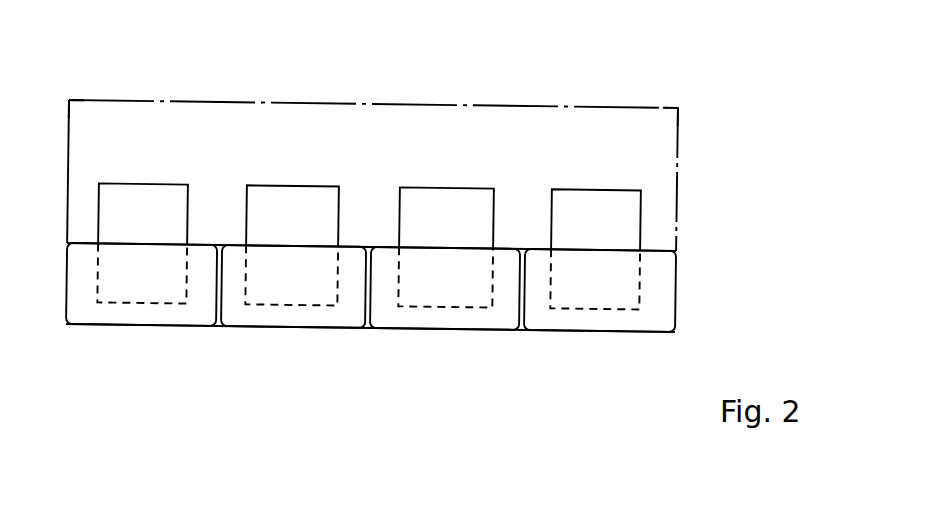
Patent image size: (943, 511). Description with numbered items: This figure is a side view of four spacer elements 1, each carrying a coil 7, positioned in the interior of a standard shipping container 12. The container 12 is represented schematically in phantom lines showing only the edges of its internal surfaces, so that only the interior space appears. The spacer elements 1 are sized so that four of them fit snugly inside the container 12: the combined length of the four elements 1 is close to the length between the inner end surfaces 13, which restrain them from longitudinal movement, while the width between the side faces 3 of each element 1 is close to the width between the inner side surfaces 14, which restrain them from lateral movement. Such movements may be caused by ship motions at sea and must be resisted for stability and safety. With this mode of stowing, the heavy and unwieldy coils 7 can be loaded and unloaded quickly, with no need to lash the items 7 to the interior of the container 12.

The spacer element 1 is at (81, 310).
The side face 3 is at (152, 282).
The coil 7 is at (152, 202).
The shipping container 12 is at (628, 108).
The inner end surface 13 is at (72, 118).
The inner side surface 14 is at (393, 152).